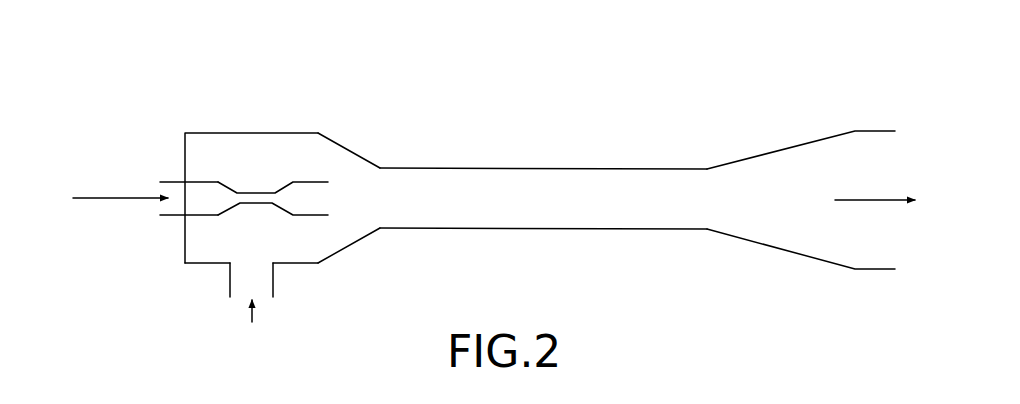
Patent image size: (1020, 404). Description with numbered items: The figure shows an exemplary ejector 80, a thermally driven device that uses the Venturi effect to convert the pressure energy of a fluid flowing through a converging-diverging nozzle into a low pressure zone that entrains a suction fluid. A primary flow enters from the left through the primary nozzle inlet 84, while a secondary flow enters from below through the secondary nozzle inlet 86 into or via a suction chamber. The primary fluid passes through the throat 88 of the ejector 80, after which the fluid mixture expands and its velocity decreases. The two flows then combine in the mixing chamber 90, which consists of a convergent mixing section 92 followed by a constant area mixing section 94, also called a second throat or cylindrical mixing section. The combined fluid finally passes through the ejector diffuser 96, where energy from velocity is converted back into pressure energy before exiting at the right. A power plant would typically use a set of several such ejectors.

The ejector (jet pump) 80 is at (538, 112).
The primary fluid inlet 84 is at (172, 182).
The secondary fluid inlet 86 is at (228, 280).
The nozzle 88 is at (255, 193).
The converging section 90 is at (393, 158).
The suction chamber 92 is at (358, 242).
The mixing tube 94 is at (580, 229).
The diffuser 96 is at (838, 132).